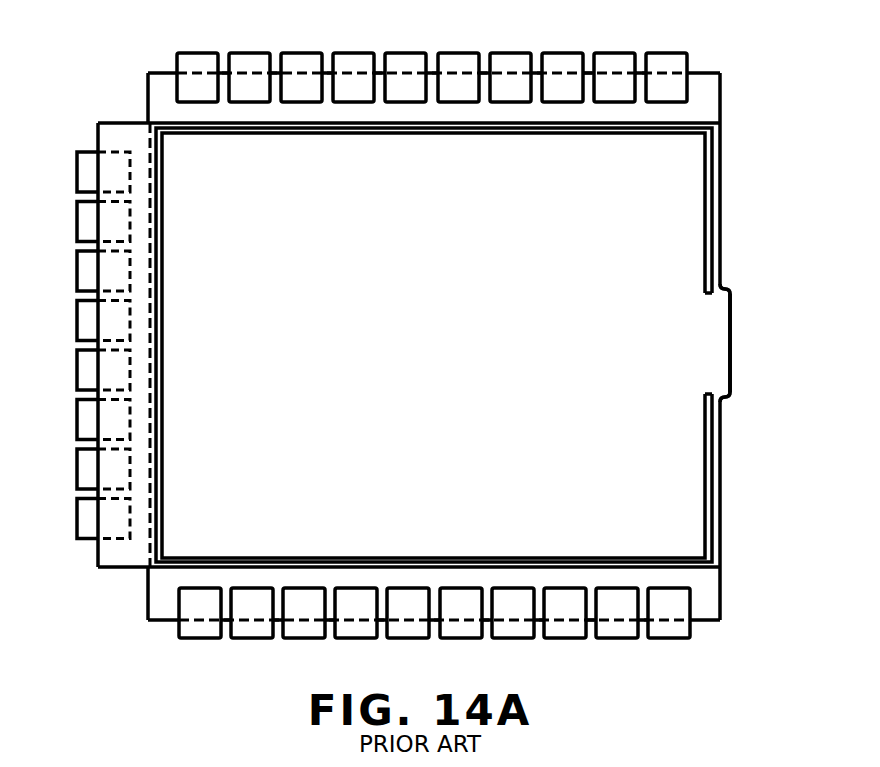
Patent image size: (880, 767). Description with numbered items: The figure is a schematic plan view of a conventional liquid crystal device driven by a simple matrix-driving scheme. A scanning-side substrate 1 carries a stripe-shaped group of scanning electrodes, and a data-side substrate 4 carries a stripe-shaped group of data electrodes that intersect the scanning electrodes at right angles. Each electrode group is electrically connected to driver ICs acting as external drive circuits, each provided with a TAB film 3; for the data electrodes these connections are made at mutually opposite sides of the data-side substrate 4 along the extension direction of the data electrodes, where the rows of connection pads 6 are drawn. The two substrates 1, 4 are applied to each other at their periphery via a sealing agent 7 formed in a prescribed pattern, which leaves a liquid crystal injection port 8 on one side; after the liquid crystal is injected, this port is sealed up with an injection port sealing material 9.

The scanning-side substrate 1 is at (123, 132).
The TAB film 3 is at (83, 170).
The data-side substrate 4 is at (703, 82).
The lead pads 6 is at (667, 60).
The sealing agent 7 is at (705, 483).
The liquid crystal injection port 8 is at (693, 369).
The injection port sealing material 9 is at (727, 350).